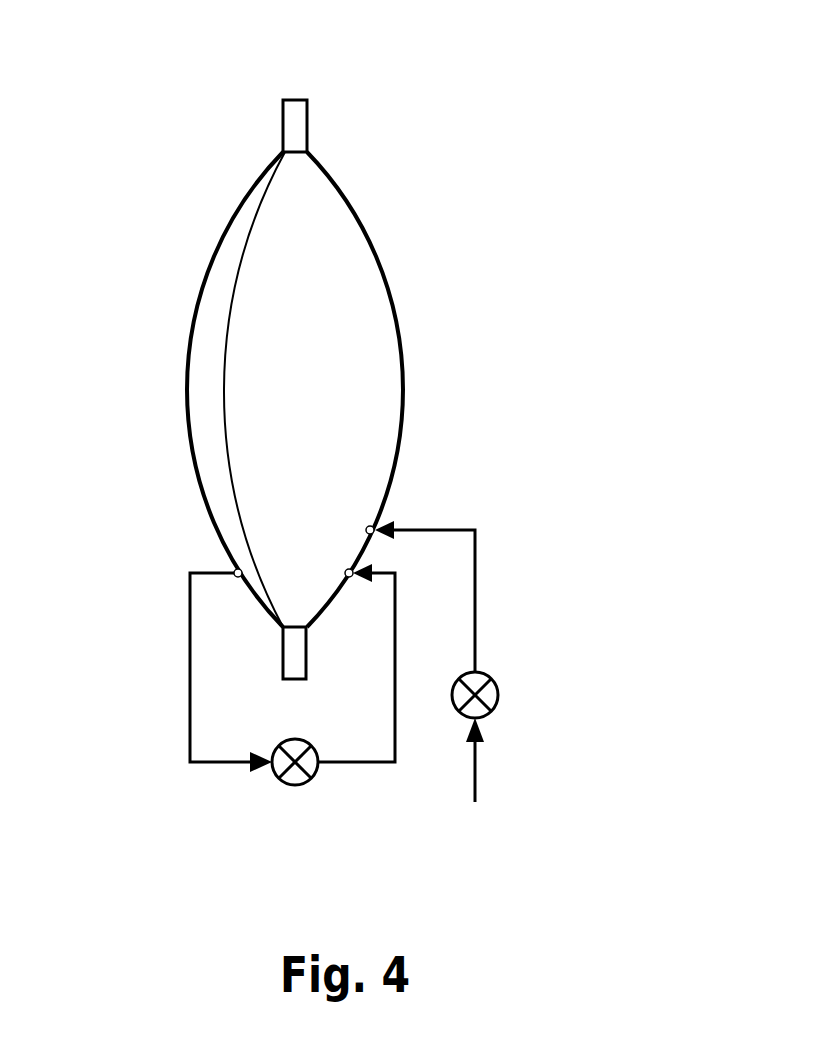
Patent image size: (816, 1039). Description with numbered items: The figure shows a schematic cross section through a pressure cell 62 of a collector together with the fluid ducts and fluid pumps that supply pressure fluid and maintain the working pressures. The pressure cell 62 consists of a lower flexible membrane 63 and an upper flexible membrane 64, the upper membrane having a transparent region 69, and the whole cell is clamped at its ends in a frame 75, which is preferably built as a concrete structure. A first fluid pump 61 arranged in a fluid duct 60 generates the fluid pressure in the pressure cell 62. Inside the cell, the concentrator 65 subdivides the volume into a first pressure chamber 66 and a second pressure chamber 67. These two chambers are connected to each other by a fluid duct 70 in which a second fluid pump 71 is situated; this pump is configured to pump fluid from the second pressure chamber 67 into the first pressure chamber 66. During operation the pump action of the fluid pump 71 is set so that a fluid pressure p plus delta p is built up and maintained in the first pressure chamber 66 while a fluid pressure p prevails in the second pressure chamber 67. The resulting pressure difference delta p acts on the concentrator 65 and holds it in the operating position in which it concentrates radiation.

The fluid duct 60 is at (477, 598).
The first fluid pump 61 is at (500, 695).
The pressure cell 62 is at (128, 138).
The lower flexible membrane 63 is at (192, 328).
The upper flexible membrane 64 is at (318, 163).
The concentrator 65 is at (233, 493).
The first pressure chamber 66 is at (338, 302).
The second pressure chamber 67 is at (222, 265).
The transparent region 69 is at (365, 227).
The fluid duct 70 is at (190, 713).
The second fluid pump 71 is at (285, 780).
The frame 75 is at (298, 112).